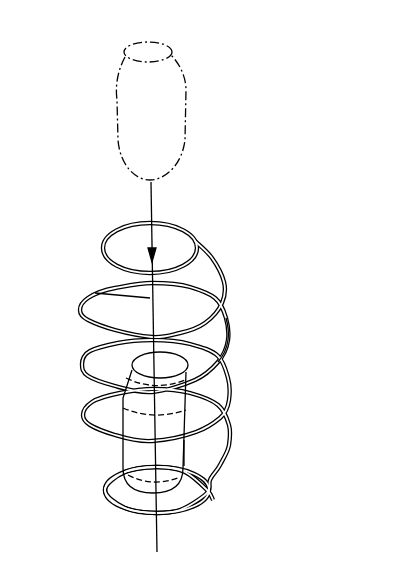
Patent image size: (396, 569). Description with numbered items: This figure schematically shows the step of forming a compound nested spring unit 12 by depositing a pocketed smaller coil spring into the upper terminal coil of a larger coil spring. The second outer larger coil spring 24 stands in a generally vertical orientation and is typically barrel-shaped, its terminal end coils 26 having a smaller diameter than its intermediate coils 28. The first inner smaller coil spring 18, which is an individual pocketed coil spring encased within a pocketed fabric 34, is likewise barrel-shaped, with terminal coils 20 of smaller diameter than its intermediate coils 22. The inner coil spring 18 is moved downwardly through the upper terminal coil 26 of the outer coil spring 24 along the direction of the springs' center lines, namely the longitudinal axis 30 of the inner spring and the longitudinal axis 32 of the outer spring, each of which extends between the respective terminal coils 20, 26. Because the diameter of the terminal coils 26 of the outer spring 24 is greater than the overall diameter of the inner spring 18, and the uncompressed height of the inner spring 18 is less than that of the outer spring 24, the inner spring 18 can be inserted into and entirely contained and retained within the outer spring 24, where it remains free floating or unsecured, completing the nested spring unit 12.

The compound nested spring unit 12 is at (173, 297).
The first inner smaller coil spring 18 is at (192, 121).
The terminal coils 20 is at (132, 366).
The intermediate coils 22 is at (123, 413).
The second outer larger coil spring 24 is at (162, 374).
The terminal end coils 26 is at (107, 240).
The intermediate coils 28 is at (225, 366).
The longitudinal axis 30 is at (155, 415).
The longitudinal axis 32 is at (95, 293).
The pocketed fabric 34 is at (188, 453).